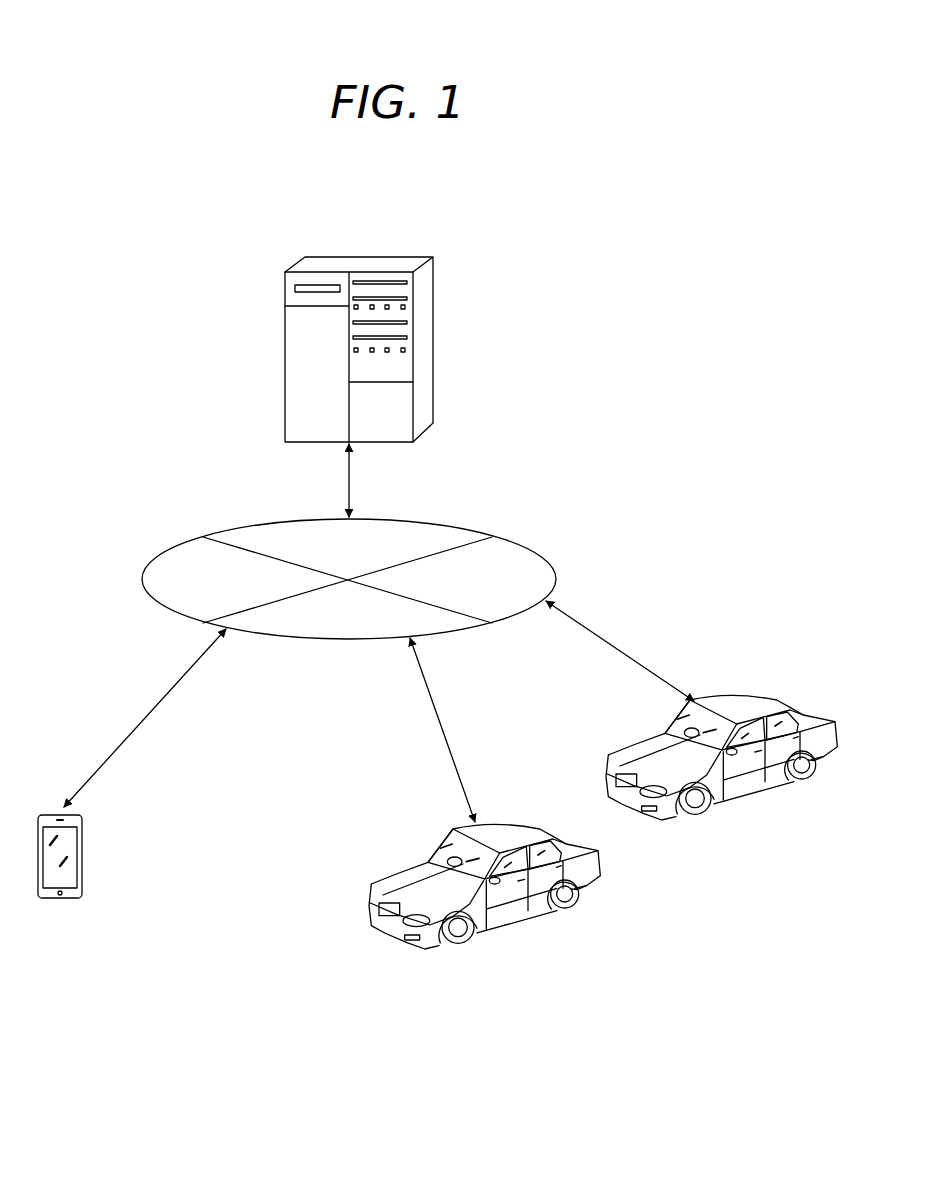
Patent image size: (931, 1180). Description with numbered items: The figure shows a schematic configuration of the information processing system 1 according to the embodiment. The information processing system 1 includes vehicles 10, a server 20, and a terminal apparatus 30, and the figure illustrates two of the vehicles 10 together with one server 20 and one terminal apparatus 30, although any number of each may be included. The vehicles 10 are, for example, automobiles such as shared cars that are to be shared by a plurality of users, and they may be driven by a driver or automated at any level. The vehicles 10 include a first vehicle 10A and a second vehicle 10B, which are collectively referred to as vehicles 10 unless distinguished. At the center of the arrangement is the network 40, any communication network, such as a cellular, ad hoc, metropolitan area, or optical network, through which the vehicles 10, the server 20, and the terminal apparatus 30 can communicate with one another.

The information processing system 1 is at (100, 254).
The vehicles 10 is at (603, 785).
The first vehicle 10A is at (503, 820).
The second vehicle 10B is at (737, 697).
The server 20 is at (357, 256).
The terminal apparatus 30 is at (60, 900).
The network 40 is at (518, 542).